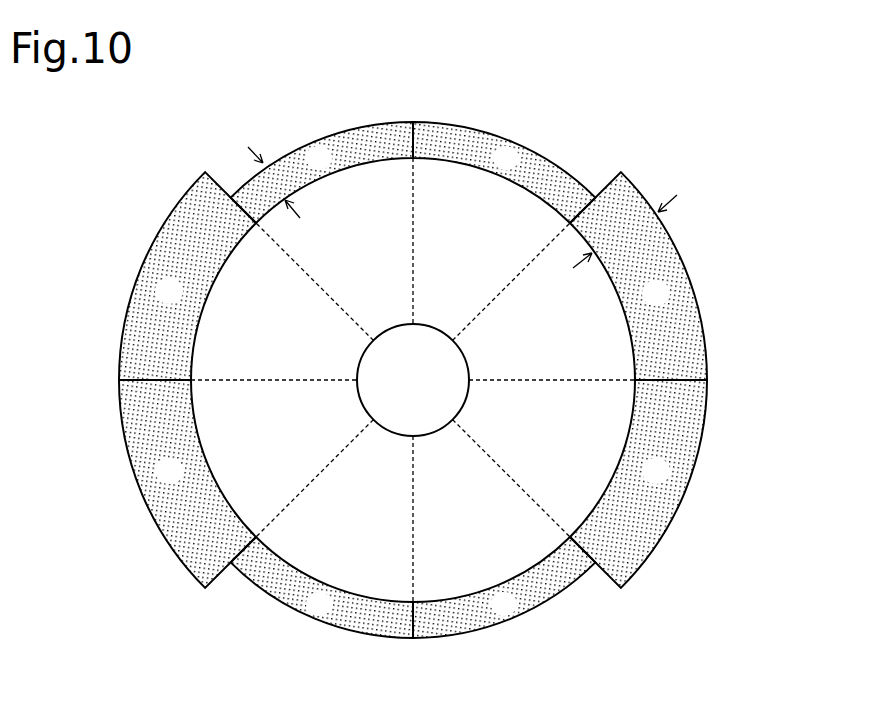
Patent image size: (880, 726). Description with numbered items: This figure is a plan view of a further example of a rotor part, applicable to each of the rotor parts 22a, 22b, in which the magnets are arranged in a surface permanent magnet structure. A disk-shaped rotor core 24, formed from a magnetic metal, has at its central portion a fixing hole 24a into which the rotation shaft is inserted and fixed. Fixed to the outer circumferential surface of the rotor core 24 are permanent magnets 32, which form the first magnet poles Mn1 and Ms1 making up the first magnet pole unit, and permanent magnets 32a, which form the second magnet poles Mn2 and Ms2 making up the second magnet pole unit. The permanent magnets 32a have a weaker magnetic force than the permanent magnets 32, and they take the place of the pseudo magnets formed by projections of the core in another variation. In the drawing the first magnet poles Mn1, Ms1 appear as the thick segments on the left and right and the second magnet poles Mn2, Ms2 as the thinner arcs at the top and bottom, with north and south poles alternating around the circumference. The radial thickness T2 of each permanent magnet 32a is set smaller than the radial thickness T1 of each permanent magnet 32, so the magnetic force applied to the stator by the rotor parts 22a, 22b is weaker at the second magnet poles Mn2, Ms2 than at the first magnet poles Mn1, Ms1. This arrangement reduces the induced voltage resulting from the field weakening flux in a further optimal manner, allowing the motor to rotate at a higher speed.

The rotor part 22a is at (436, 383).
The rotor part 22b is at (715, 170).
The rotor core 24 is at (647, 343).
The fixing hole 24a is at (430, 432).
The permanent magnet 32 is at (118, 400).
The permanent magnet 32a is at (428, 122).
The first magnet pole Ms1 is at (681, 255).
The first magnet pole Mn1 is at (147, 252).
The second magnet pole Ms2 is at (358, 122).
The second magnet pole Mn2 is at (557, 163).
The radial thickness T1 is at (628, 222).
The radial thickness T2 is at (280, 177).